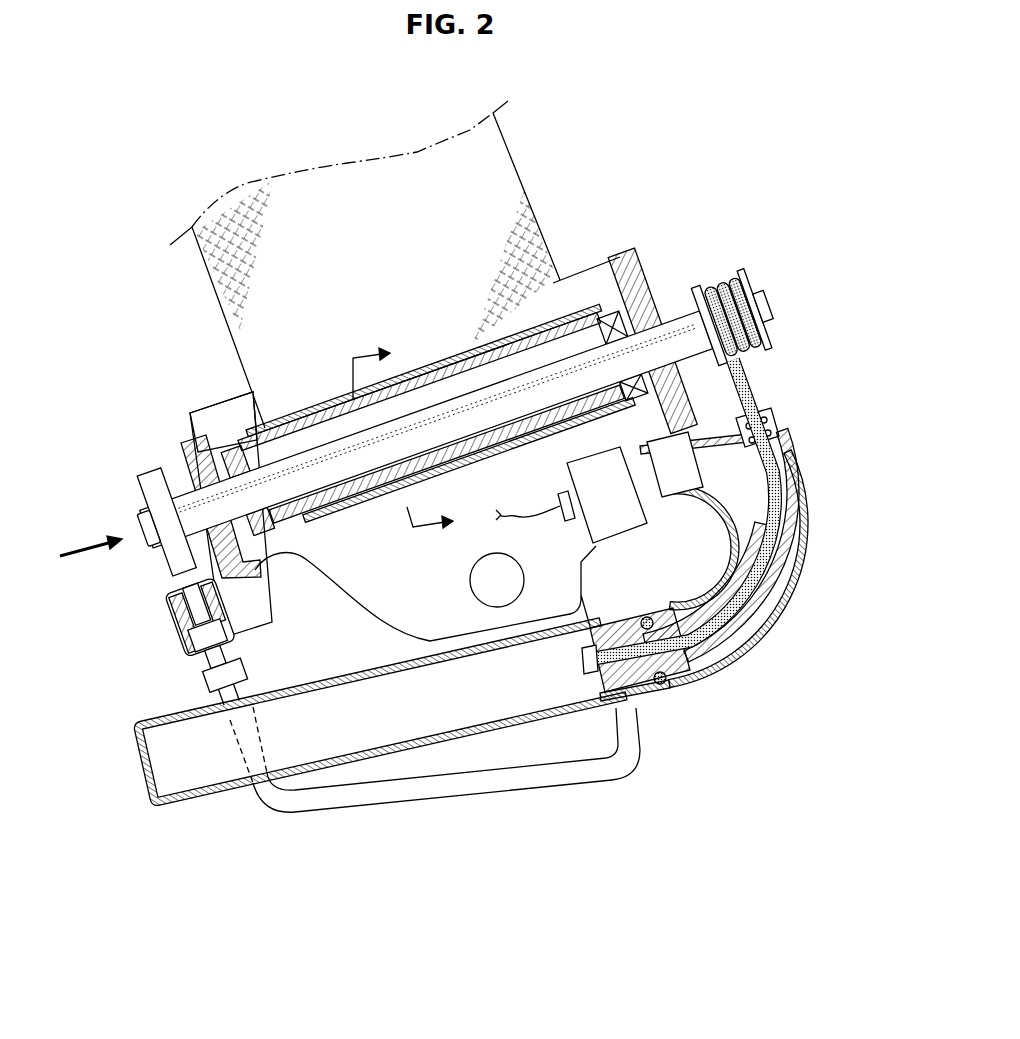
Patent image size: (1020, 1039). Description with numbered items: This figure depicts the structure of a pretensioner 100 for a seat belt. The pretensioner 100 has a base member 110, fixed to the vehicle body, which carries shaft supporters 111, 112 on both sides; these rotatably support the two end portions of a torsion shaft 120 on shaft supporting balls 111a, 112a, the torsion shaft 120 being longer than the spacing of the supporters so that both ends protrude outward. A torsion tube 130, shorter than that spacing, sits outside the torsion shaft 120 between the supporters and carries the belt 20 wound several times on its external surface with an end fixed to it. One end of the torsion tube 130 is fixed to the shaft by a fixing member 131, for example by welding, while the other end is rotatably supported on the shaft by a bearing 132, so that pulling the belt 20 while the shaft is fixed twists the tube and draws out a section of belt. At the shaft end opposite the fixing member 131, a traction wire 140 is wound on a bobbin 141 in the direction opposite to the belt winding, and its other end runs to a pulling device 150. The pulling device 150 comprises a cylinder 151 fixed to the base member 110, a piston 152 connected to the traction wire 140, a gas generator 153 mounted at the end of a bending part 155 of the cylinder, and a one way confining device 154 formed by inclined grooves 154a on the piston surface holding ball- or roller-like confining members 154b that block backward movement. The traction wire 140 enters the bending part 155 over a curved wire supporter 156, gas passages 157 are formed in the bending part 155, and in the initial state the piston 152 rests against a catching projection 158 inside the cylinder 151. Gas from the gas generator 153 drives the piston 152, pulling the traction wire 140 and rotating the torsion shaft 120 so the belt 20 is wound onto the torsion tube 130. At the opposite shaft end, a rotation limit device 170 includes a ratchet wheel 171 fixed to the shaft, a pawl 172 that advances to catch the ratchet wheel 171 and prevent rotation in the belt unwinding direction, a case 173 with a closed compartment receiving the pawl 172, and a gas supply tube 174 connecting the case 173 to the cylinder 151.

The belt 20 is at (217, 273).
The pretensioner 100 is at (481, 472).
The base member 110 is at (377, 590).
The shaft supporter 111 is at (180, 460).
The shaft supporting ball 111a is at (190, 443).
The shaft supporter 112 is at (652, 341).
The shaft supporting ball 112a is at (709, 325).
The torsion shaft 120 is at (426, 429).
The torsion tube 130 is at (436, 419).
The fixing member 131 is at (247, 490).
The bearing 132 is at (622, 356).
The traction wire 140 is at (752, 392).
The bobbin 141 is at (741, 314).
The pulling device 150 is at (715, 578).
The cylinder 151 is at (393, 755).
The piston 152 is at (583, 655).
The gas generator 153 is at (620, 523).
The one way confining device 154 is at (682, 702).
The inclined groove 154a is at (650, 700).
The confining member 154b is at (685, 690).
The bending part 155 is at (810, 500).
The curved wire supporter 156 is at (803, 617).
The gas passage 157 is at (763, 637).
The catching projection 158 is at (710, 683).
The rotation limit device 170 is at (347, 665).
The ratchet wheel 171 is at (160, 524).
The pawl 172 is at (204, 626).
The case 173 is at (228, 683).
The gas supply tube 174 is at (340, 803).